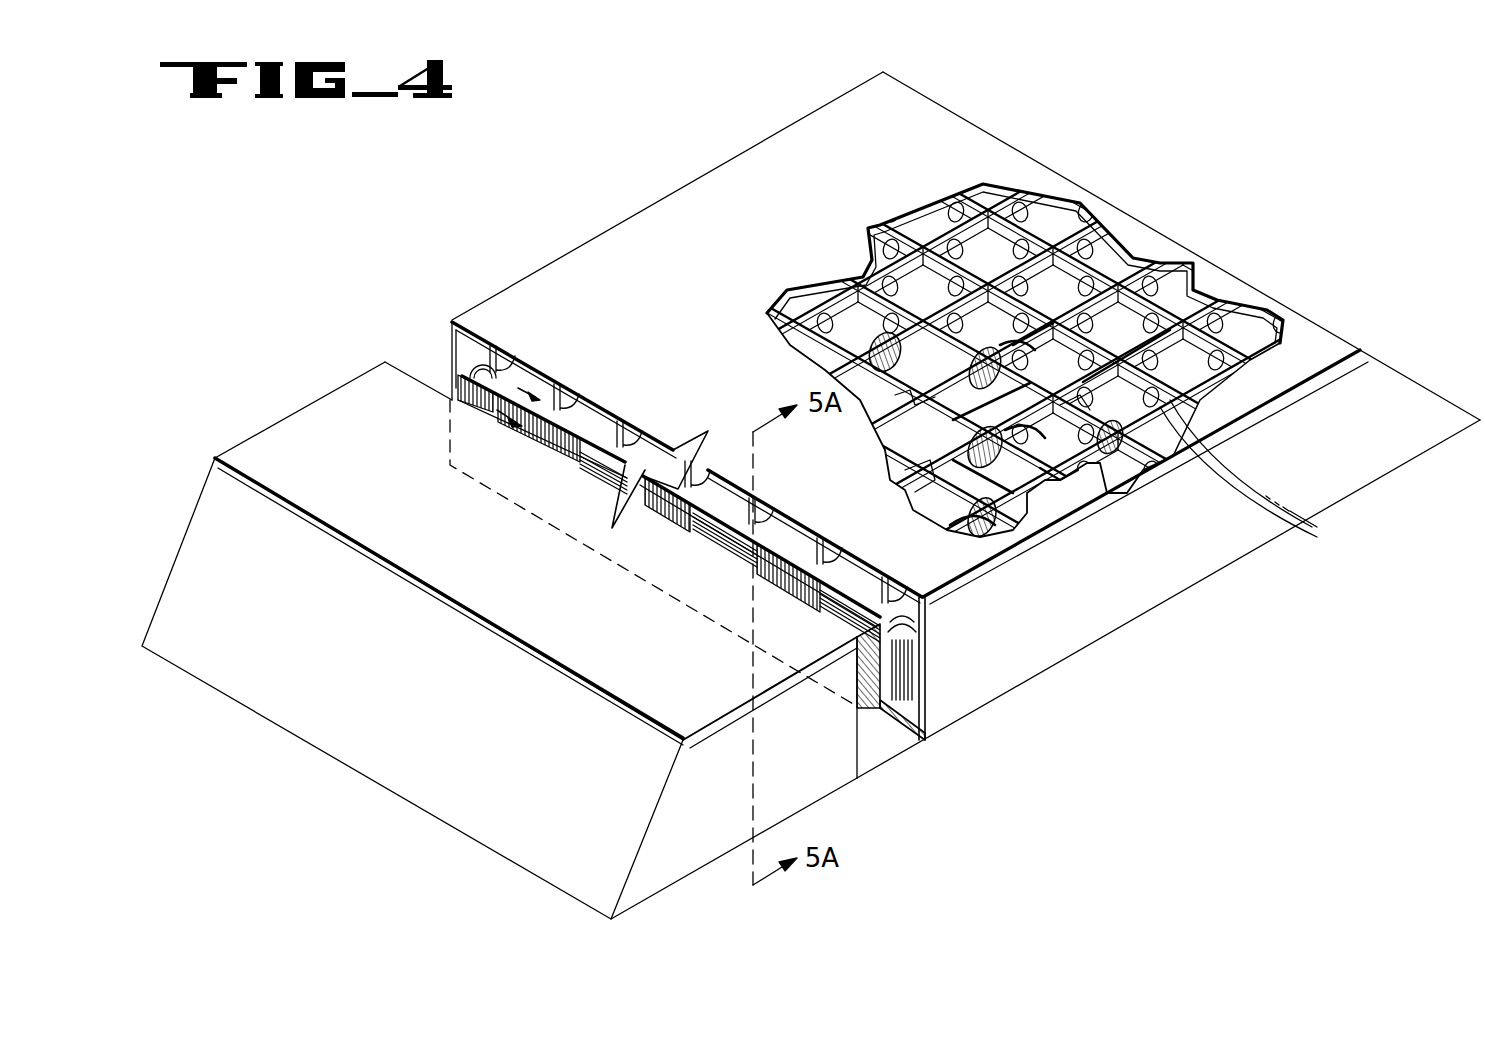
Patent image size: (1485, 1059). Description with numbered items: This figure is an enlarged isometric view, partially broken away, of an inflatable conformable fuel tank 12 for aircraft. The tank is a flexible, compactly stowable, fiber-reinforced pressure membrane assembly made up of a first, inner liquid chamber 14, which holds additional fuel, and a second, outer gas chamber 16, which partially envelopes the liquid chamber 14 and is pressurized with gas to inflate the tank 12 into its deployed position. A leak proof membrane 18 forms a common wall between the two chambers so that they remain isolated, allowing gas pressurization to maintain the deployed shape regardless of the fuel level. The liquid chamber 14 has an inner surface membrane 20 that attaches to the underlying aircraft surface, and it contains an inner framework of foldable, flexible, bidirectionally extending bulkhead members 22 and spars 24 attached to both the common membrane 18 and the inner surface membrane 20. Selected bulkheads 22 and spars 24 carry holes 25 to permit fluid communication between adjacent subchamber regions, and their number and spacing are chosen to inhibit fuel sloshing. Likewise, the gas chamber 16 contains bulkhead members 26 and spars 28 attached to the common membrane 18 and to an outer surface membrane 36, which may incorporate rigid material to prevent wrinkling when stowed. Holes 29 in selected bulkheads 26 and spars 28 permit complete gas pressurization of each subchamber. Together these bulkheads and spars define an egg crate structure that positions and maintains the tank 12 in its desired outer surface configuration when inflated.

The conformable fuel tank 12 is at (1133, 215).
The inner liquid chamber 14 is at (450, 383).
The outer gas chamber 16 is at (483, 383).
The leak proof membrane 18 is at (583, 437).
The inner surface membrane 20 is at (862, 707).
The bulkhead members 22 is at (1117, 250).
The spars 24 is at (893, 345).
The holes 25 is at (957, 532).
The bulkhead members 26 is at (930, 225).
The spars 28 is at (1037, 205).
The holes 29 is at (1145, 477).
The outer surface membrane 36 is at (955, 161).